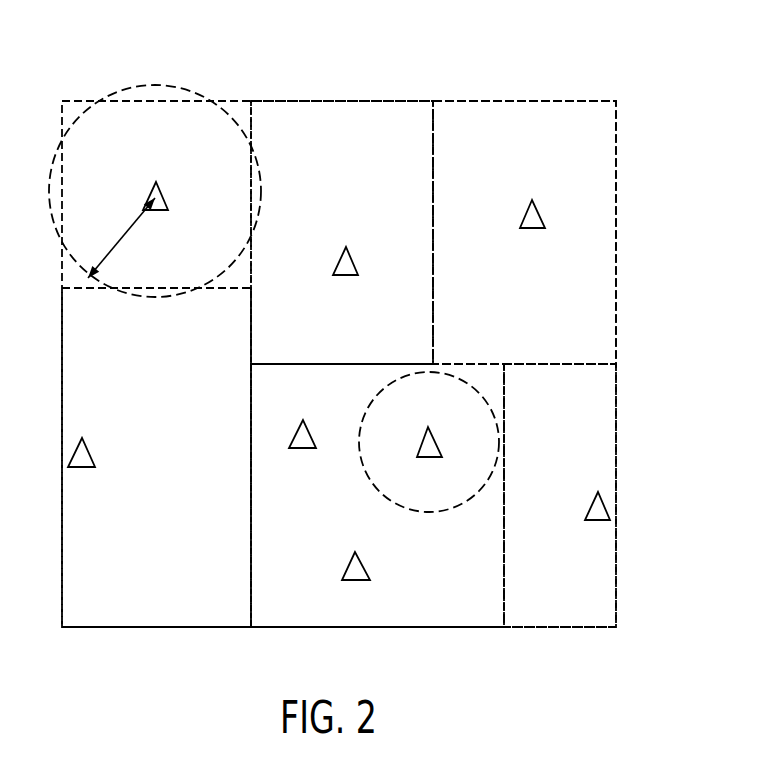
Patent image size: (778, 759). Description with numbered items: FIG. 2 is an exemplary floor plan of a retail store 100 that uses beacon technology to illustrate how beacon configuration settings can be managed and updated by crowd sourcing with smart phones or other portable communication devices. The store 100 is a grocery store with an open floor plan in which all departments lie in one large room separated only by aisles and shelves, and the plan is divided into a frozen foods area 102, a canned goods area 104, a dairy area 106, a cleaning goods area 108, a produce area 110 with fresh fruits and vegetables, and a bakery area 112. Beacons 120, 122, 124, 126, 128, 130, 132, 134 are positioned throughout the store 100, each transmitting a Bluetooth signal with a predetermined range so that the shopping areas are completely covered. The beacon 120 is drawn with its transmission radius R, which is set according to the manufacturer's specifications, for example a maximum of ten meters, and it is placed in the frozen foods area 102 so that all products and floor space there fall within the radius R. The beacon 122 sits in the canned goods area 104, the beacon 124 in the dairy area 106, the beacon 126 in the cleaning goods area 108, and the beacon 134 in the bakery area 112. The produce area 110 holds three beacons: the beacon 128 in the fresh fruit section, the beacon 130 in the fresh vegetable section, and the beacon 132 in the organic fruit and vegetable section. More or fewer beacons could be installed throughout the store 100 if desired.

The retail store 100 is at (640, 80).
The frozen foods area 102 is at (93, 117).
The canned goods area 104 is at (340, 112).
The dairy area 106 is at (530, 112).
The cleaning goods area 108 is at (92, 617).
The produce area 110 is at (268, 617).
The bakery area 112 is at (607, 600).
The beacon 120 is at (160, 192).
The beacon 122 is at (346, 266).
The beacon 124 is at (532, 220).
The beacon 126 is at (83, 456).
The beacon 128 is at (303, 440).
The beacon 130 is at (357, 570).
The beacon 132 is at (428, 448).
The beacon 134 is at (598, 510).
The transmission radius R is at (123, 237).